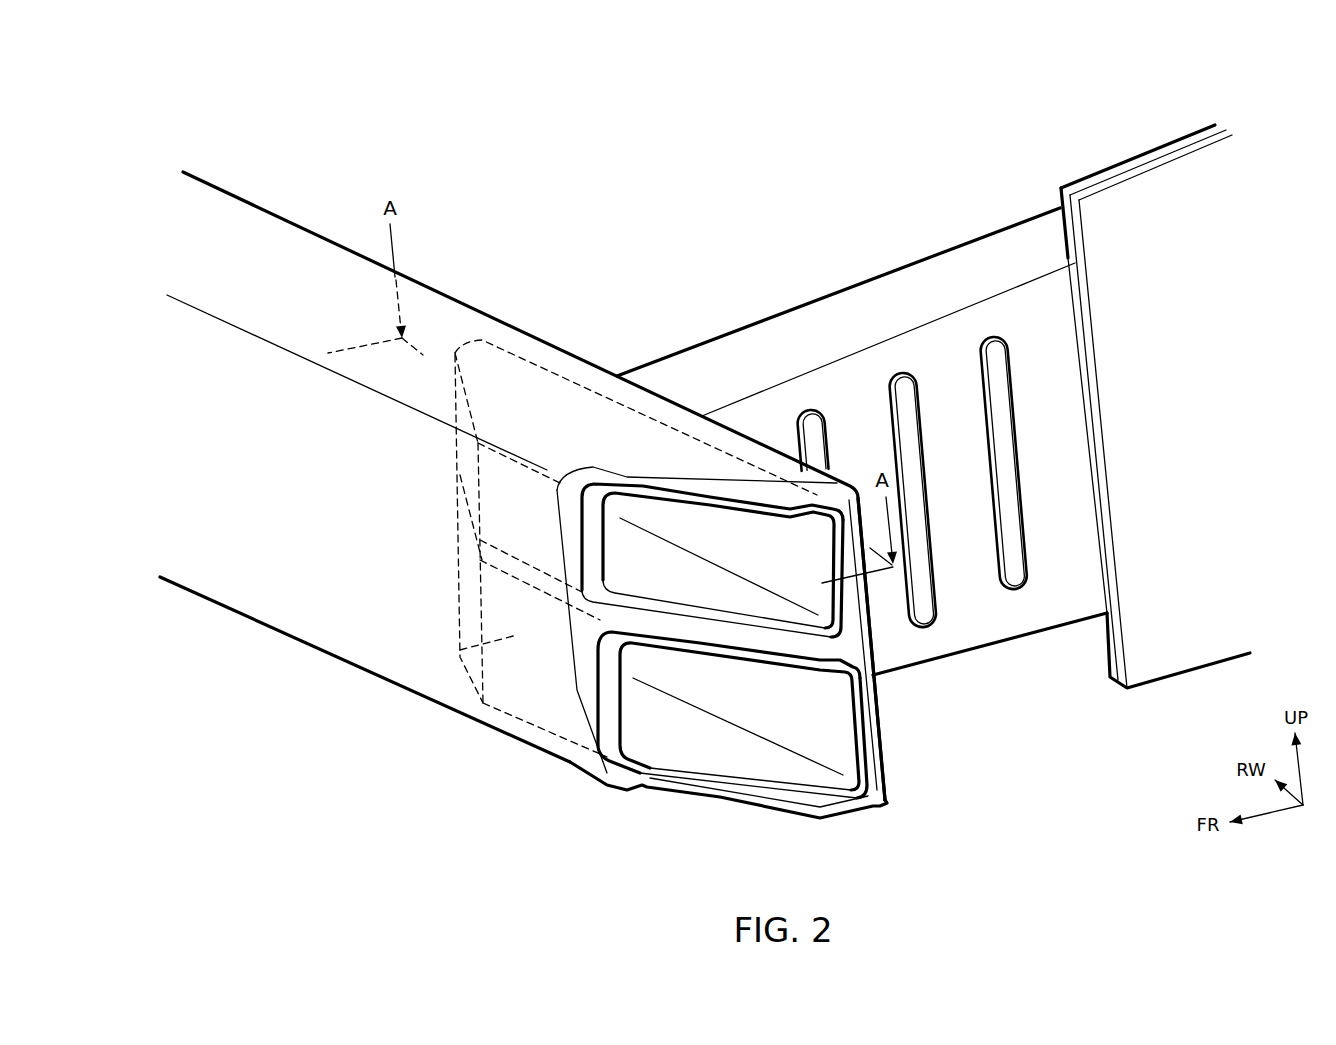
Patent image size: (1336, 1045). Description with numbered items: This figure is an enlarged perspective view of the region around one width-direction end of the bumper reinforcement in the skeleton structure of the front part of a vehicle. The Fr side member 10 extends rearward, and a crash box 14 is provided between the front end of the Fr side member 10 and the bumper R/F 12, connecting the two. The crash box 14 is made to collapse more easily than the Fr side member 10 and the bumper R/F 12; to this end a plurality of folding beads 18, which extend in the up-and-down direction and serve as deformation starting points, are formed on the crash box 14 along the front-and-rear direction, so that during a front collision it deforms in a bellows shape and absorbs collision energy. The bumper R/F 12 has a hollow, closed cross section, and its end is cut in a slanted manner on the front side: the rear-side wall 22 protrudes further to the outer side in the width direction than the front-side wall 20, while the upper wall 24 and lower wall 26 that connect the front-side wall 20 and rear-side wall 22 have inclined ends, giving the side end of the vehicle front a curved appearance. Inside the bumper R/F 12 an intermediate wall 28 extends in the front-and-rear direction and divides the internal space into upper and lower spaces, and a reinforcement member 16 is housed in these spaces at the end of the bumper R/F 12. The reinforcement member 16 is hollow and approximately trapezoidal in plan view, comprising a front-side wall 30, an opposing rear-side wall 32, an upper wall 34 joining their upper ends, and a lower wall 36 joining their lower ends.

The Fr side member 10 is at (1155, 213).
The bumper R/F 12 is at (250, 204).
The crash box 14 is at (950, 272).
The reinforcement member 16 is at (513, 387).
The folding bead 18 is at (808, 427).
The front-side wall 20 is at (583, 685).
The rear-side wall 22 is at (887, 760).
The upper wall 24 is at (692, 490).
The lower wall 26 is at (695, 787).
The intermediate wall 28 is at (680, 635).
The front-side wall 30 is at (597, 555).
The rear-side wall 32 is at (838, 557).
The upper wall 34 is at (707, 503).
The lower wall 36 is at (723, 633).